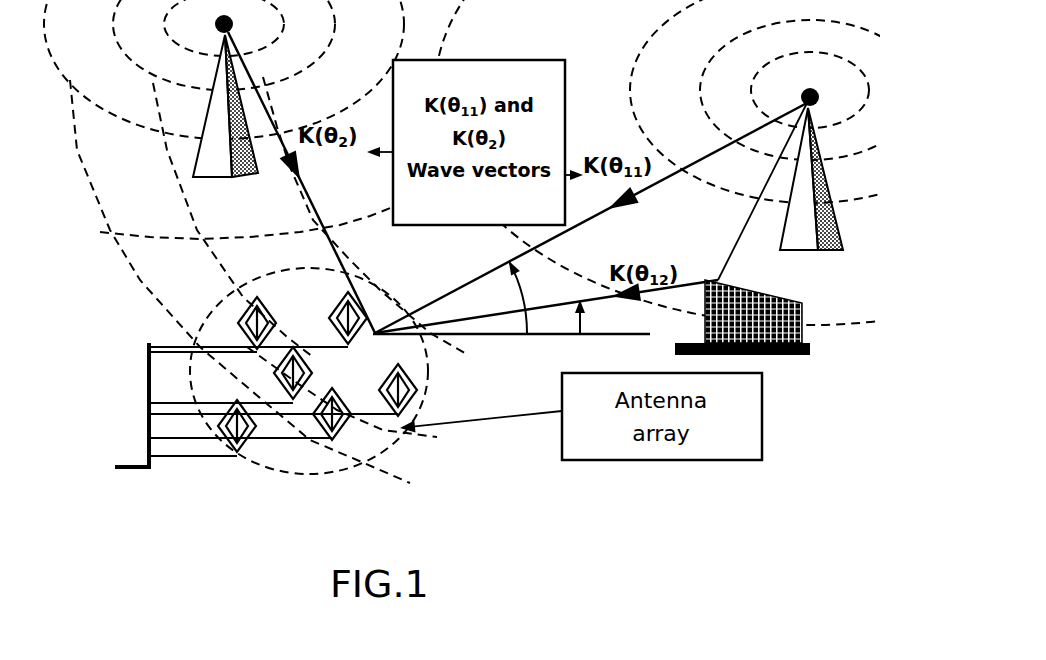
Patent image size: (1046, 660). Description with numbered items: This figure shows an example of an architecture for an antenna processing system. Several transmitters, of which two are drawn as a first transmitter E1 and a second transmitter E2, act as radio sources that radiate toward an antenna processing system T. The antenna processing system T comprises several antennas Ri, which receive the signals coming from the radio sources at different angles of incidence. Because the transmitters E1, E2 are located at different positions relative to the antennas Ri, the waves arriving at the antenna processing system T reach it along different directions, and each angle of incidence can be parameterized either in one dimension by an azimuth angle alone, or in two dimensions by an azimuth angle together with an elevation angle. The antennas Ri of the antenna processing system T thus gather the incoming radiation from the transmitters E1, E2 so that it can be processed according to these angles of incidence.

The transmitter E1 is at (204, 24).
The transmitter E2 is at (784, 88).
The antennas Ri is at (230, 308).
The antenna processing system T is at (240, 412).